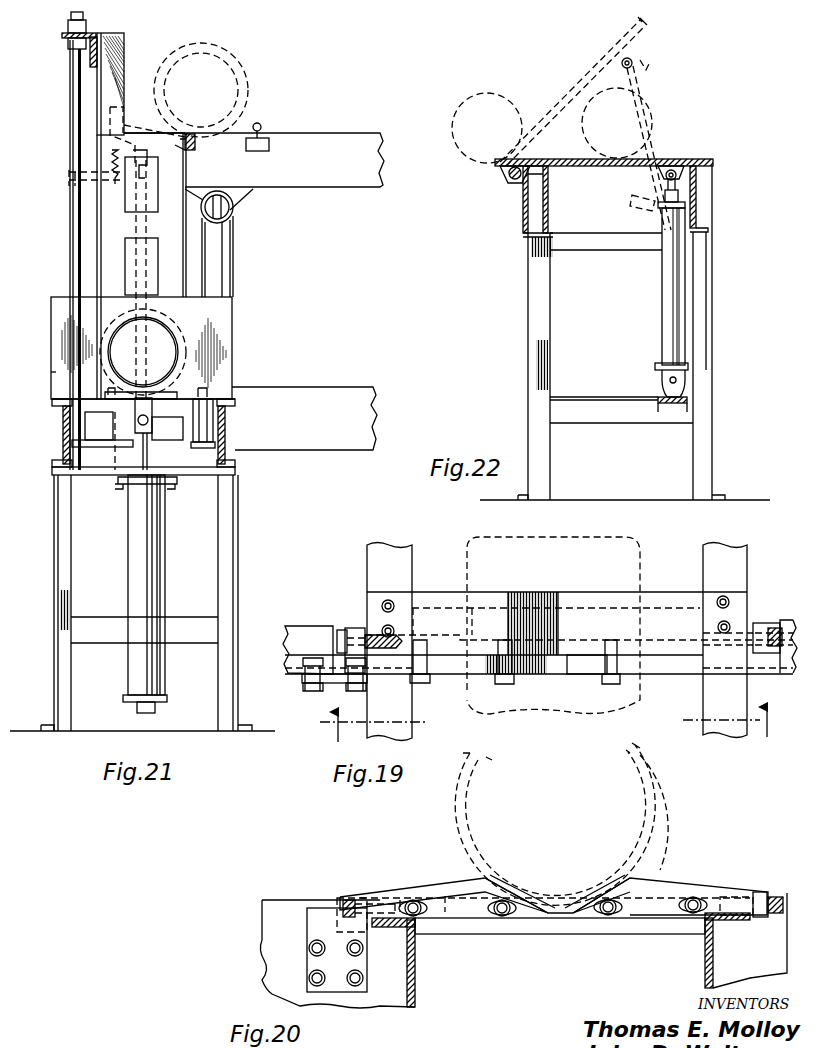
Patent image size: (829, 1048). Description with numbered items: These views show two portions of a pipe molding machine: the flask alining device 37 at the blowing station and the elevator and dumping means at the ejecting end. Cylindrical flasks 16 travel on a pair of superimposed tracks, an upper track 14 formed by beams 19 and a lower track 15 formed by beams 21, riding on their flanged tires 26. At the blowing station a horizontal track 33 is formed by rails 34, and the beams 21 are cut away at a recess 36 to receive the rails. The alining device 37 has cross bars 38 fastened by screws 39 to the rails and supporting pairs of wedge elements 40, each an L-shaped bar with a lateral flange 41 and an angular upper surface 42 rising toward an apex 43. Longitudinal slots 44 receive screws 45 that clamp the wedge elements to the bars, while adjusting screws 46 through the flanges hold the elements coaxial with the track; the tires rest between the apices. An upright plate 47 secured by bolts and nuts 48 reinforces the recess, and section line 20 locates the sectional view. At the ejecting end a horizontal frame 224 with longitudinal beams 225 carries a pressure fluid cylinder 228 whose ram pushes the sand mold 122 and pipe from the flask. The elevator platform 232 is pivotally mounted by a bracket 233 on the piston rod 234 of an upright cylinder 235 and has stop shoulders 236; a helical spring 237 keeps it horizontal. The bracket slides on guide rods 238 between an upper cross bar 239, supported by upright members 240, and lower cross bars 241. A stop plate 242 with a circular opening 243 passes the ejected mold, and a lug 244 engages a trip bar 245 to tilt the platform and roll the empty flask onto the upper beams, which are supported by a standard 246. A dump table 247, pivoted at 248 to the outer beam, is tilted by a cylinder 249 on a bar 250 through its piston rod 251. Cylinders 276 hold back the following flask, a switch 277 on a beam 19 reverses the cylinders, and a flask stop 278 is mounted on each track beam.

In FIG. 21, the upper track 14 is at (322, 137).
In FIG. 21, the lower track 15 is at (329, 461).
In FIG. 21, the cylindrical flask 16 is at (232, 77).
In FIG. 19, the cylindrical flask 16 is at (642, 554).
In FIG. 20, the cylindrical flask 16 is at (472, 805).
In FIG. 21, the upper track beams 19 is at (340, 187).
In FIG. 19, the inverted U-shaped standards 20 is at (547, 729).
In FIG. 21, the lower track beams 21 is at (320, 387).
In FIG. 19, the lower track beams 21 is at (318, 626).
In FIG. 20, the lower track beams 21 is at (270, 939).
In FIG. 19, the flanged tires 26 is at (645, 700).
In FIG. 20, the flanged tires 26 is at (668, 805).
In FIG. 19, the horizontal track 33 is at (367, 562).
In FIG. 20, the horizontal track 33 is at (705, 967).
In FIG. 19, the rails 34 is at (747, 548).
In FIG. 20, the rails 34 is at (415, 983).
In FIG. 19, the recess 36 is at (770, 623).
In FIG. 20, the recess 36 is at (350, 898).
In FIG. 19, the flask alining device 37 is at (455, 592).
In FIG. 20, the flask alining device 37 is at (652, 880).
In FIG. 19, the cross bars 38 is at (685, 592).
In FIG. 20, the cross bars 38 is at (550, 928).
In FIG. 19, the screws 39 is at (728, 597).
In FIG. 20, the screws 39 is at (725, 925).
In FIG. 19, the wedge elements 40 is at (432, 655).
In FIG. 20, the wedge elements 40 is at (685, 886).
In FIG. 19, the lateral flange 41 is at (353, 628).
In FIG. 19, the angular upper surface 42 is at (590, 655).
In FIG. 20, the angular upper surface 42 is at (428, 893).
In FIG. 19, the apex 43 is at (565, 674).
In FIG. 20, the apex 43 is at (530, 878).
In FIG. 20, the longitudinal slots 44 is at (506, 918).
In FIG. 19, the screws 45 is at (420, 683).
In FIG. 20, the screws 45 is at (612, 917).
In FIG. 19, the adjusting screws 46 is at (337, 640).
In FIG. 20, the adjusting screws 46 is at (775, 896).
In FIG. 19, the upright plate 47 is at (305, 683).
In FIG. 20, the upright plate 47 is at (315, 908).
In FIG. 19, the bolts and nuts 48 is at (313, 692).
In FIG. 20, the bolts and nuts 48 is at (363, 977).
In FIG. 22, the double hub sand mold 122 is at (494, 94).
In FIG. 21, the horizontal frame 224 is at (271, 485).
In FIG. 22, the horizontal frame 224 is at (525, 240).
In FIG. 21, the longitudinal beams 225 is at (226, 447).
In FIG. 22, the longitudinal beams 225 is at (700, 215).
In FIG. 21, the pressure fluid cylinder 228 is at (71, 577).
In FIG. 22, the pressure fluid cylinder 228 is at (712, 441).
In FIG. 21, the carriage or platform 232 is at (158, 380).
In FIG. 21, the bracket 233 is at (92, 447).
In FIG. 21, the piston rod 234 is at (148, 454).
In FIG. 21, the upright pressure fluid cylinder 235 is at (165, 569).
In FIG. 21, the stop shoulders 236 is at (120, 380).
In FIG. 21, the helical spring 237 is at (115, 434).
In FIG. 21, the upright guide rods 238 is at (70, 128).
In FIG. 21, the upper cross bar 239 is at (62, 36).
In FIG. 21, the upright members 240 is at (124, 39).
In FIG. 21, the lower cross bars 241 is at (52, 473).
In FIG. 21, the stop plate 242 is at (51, 315).
In FIG. 21, the circular opening 243 is at (168, 326).
In FIG. 21, the lug 244 is at (172, 420).
In FIG. 21, the trip bar 245 is at (196, 148).
In FIG. 21, the inverted U-shaped standard 246 is at (235, 247).
In FIG. 22, the dump table 247 is at (705, 159).
In FIG. 22, the pivotal attachment 248 is at (510, 182).
In FIG. 22, the pressure fluid cylinder 249 is at (662, 346).
In FIG. 22, the bar 250 is at (668, 412).
In FIG. 22, the piston rod 251 is at (683, 189).
In FIG. 21, the cylinders 276 is at (215, 417).
In FIG. 21, the switch 277 is at (262, 125).
In FIG. 21, the flask stop 278 is at (51, 372).